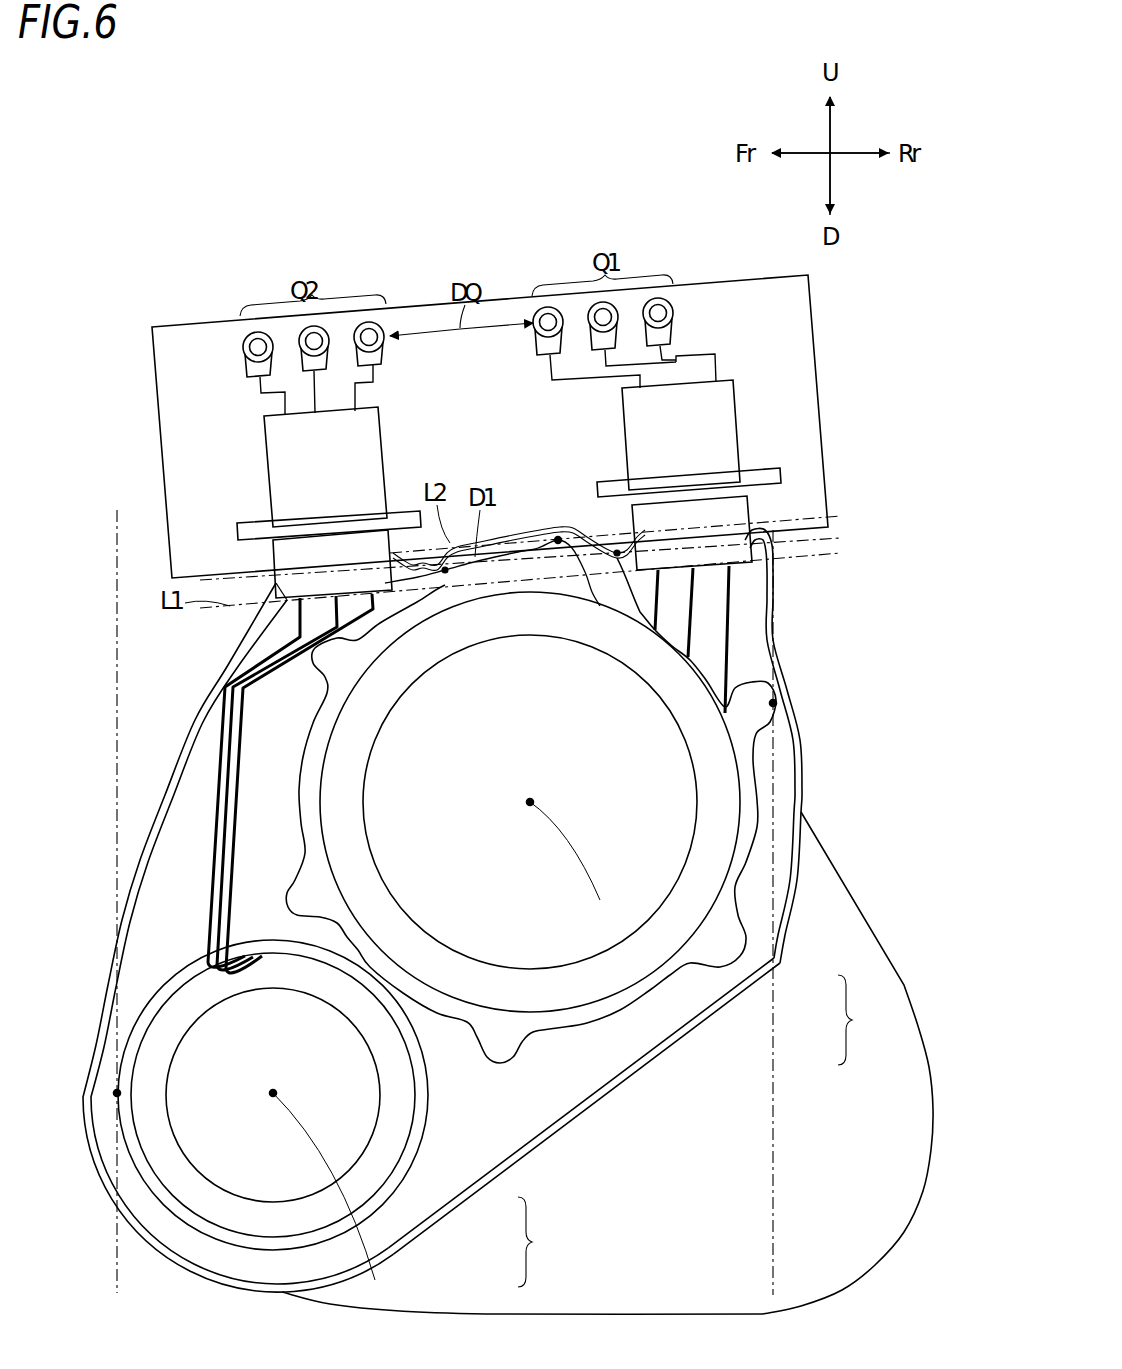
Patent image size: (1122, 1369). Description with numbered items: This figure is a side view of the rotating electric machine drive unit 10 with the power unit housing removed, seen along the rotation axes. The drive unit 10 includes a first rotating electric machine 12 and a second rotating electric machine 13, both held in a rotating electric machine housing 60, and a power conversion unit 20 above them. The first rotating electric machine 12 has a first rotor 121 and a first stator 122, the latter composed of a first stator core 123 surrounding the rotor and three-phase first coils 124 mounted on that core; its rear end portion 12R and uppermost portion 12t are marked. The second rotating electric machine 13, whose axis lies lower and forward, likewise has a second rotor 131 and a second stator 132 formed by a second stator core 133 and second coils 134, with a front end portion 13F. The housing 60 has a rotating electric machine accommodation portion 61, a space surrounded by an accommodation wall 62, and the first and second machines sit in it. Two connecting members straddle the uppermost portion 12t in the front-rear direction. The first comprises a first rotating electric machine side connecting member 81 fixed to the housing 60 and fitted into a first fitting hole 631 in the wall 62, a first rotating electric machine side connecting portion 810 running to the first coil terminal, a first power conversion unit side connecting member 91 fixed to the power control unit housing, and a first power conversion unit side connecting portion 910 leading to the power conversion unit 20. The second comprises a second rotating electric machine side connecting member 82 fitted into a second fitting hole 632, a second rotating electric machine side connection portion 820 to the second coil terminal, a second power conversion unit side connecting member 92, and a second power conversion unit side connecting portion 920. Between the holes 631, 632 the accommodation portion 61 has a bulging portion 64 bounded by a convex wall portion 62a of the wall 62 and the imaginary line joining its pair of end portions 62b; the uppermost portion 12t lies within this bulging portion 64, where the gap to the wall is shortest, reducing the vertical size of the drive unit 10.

The rotating electric machine drive unit 10 is at (182, 212).
The power conversion unit 20 is at (708, 300).
The second power conversion unit side connecting portion 920 is at (358, 362).
The first power conversion unit side connecting portion 910 is at (548, 350).
The second power conversion unit side connecting member 92 is at (290, 440).
The first power conversion unit side connecting member 91 is at (725, 393).
The second rotating electric machine side connecting member 82 is at (240, 556).
The first rotating electric machine side connecting member 81 is at (740, 523).
The end portions of the convex wall portion 62b is at (396, 574).
The convex wall portion 62a is at (545, 550).
The bulging portion 64 is at (515, 560).
The uppermost portion 12t is at (558, 540).
The first rotating electric machine 12 is at (592, 802).
The first rotor 121 is at (660, 847).
The first stator 122 is at (868, 1020).
The first stator core 123 is at (735, 950).
The first coils 124 is at (650, 950).
The rear end portion 12R is at (778, 703).
The second rotating electric machine 13 is at (302, 1122).
The second rotor 131 is at (355, 1080).
The second stator 132 is at (547, 1242).
The second stator core 133 is at (408, 1162).
The second coils 134 is at (355, 1190).
The front end portion 13F is at (113, 1093).
The rotating electric machine housing 60 is at (140, 880).
The rotating electric machine accommodation portion 61 is at (573, 1063).
The accommodation wall 62 is at (180, 760).
The first fitting hole 631 is at (790, 565).
The second fitting hole 632 is at (272, 603).
The second rotating electric machine side connection portion 820 is at (226, 955).
The first rotating electric machine side connecting portion 810 is at (660, 600).